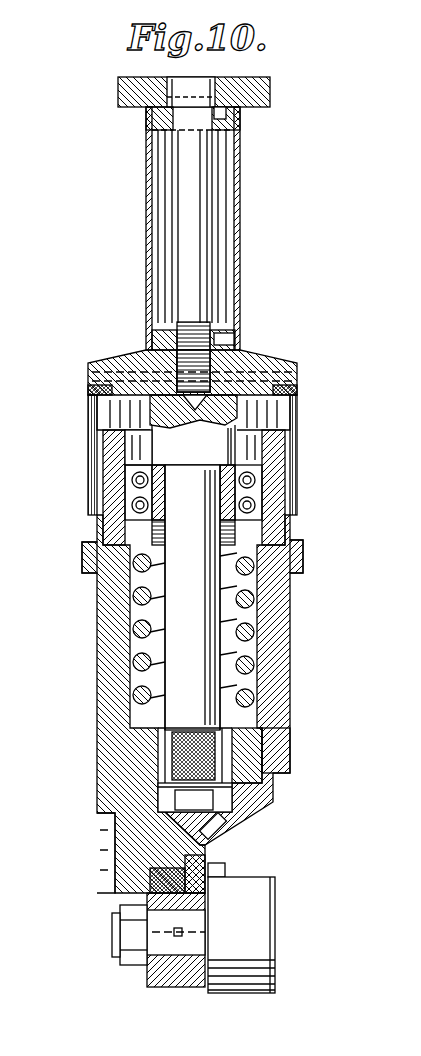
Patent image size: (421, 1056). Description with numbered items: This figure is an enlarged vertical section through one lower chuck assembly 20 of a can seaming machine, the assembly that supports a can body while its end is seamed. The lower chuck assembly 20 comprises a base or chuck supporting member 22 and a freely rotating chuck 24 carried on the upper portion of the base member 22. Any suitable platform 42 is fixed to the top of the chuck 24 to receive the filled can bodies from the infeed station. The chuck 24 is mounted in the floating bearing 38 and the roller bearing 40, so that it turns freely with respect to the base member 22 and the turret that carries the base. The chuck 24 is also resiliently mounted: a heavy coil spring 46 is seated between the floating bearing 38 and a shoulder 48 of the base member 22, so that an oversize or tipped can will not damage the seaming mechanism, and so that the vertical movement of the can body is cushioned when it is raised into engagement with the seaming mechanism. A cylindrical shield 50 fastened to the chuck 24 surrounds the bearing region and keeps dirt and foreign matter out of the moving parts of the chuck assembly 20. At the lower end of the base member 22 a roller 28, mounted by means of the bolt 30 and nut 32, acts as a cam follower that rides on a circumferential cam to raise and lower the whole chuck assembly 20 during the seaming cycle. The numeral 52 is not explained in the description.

The lower chuck assembly 20 is at (90, 525).
The base or chuck supporting member 22 is at (292, 730).
The freely rotating chuck 24 is at (242, 200).
The roller 28 is at (270, 880).
The bolt 30 is at (112, 930).
The nut 32 is at (128, 975).
The floating bearing 38 is at (270, 480).
The roller bearing 40 is at (245, 795).
The platform 42 is at (270, 90).
The coil spring 46 is at (295, 585).
The shoulder 48 is at (264, 748).
The cylindrical shield 50 is at (297, 415).
The shoulder 52 is at (300, 540).